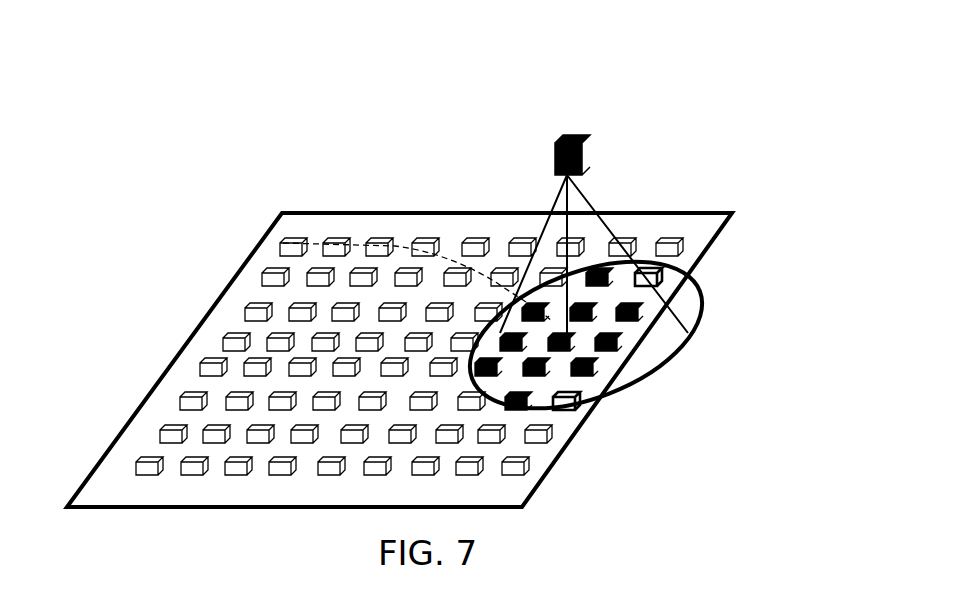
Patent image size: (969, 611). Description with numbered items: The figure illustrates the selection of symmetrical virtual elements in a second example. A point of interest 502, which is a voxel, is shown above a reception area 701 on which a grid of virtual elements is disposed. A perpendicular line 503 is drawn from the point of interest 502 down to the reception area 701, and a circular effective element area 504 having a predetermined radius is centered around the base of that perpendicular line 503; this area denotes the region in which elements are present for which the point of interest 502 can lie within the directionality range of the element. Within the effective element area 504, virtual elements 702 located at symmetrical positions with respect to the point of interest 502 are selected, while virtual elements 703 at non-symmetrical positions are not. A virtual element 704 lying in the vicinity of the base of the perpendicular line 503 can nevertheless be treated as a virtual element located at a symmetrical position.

The reception area 701 is at (173, 360).
The virtual elements at symmetrical positions 702 is at (622, 344).
The virtual elements at non-symmetrical positions 703 is at (667, 276).
The virtual element in the vicinity of the base of the perpendicular line 704 is at (283, 243).
The point of interest 502 is at (566, 136).
The perpendicular line 503 is at (600, 212).
The effective element area 504 is at (703, 288).